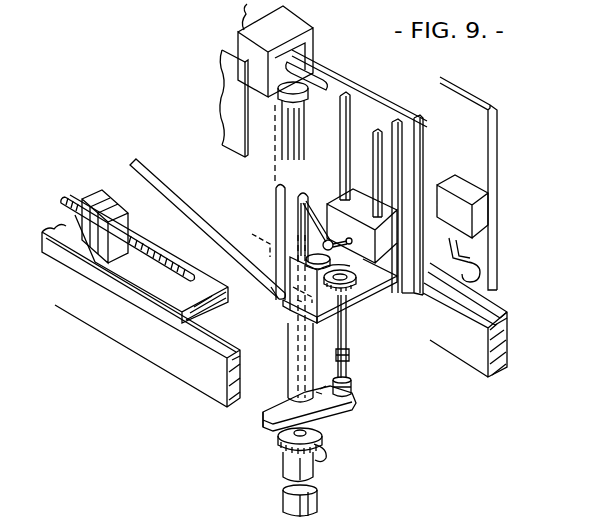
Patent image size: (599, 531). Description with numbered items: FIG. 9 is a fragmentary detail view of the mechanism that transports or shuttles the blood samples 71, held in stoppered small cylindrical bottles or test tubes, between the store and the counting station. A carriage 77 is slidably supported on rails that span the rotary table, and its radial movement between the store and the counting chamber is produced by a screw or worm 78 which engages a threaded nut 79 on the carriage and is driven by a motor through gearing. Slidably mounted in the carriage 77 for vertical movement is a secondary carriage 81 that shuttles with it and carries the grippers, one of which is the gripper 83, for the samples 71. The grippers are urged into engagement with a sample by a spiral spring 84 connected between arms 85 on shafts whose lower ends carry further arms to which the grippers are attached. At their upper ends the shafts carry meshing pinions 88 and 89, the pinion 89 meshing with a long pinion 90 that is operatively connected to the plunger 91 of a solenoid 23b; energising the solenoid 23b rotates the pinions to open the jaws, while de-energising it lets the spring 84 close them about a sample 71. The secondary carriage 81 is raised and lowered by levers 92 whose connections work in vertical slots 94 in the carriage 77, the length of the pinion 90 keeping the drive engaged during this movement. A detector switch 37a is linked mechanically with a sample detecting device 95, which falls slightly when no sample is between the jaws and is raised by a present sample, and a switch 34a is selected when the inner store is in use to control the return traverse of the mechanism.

The solenoid 23b is at (244, 30).
The plunger 91 is at (312, 70).
The long pinion 90 is at (305, 143).
The carriage 77 is at (370, 104).
The vertical slots 94 is at (275, 192).
The pinion 89 is at (307, 240).
The detector switch 37a is at (350, 236).
The pinion 88 is at (354, 282).
The secondary carriage 81 is at (347, 296).
The arms 85 is at (351, 385).
The spiral spring 84 is at (310, 393).
The gripper 83 is at (277, 447).
The sample detecting device 95 is at (288, 456).
The sample bottle 71 is at (317, 500).
The threaded nut 79 is at (127, 206).
The levers 92 is at (173, 195).
The screw or worm 78 is at (164, 241).
The switch 34a is at (487, 222).